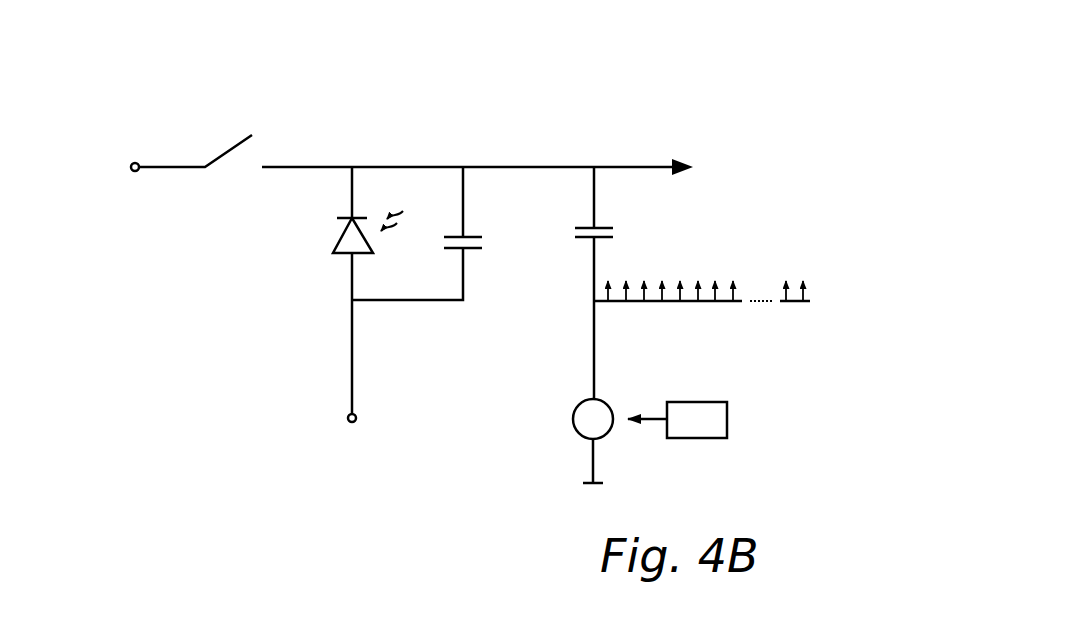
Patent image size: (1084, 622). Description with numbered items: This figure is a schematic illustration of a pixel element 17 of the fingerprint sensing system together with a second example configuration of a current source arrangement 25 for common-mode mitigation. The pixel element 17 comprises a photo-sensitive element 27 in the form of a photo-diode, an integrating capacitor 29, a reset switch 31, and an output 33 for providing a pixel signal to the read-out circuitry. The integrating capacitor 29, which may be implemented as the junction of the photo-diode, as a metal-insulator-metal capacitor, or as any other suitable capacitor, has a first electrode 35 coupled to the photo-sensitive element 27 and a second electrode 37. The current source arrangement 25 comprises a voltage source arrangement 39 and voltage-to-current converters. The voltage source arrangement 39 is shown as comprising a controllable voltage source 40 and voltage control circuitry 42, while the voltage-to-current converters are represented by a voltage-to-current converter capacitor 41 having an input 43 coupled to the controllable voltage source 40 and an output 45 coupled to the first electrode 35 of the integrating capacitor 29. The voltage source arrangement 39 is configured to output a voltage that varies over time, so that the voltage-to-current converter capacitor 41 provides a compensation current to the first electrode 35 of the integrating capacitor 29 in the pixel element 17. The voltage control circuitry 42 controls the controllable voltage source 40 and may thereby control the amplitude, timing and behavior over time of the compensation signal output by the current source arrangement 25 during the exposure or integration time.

The pixel element 17 is at (540, 86).
The reset switch 31 is at (237, 143).
The output 33 is at (648, 167).
The photo-sensitive element 27 is at (338, 232).
The integrating capacitor 29 is at (427, 272).
The first electrode 35 is at (458, 232).
The second electrode 37 is at (463, 250).
The voltage-to-current converter capacitor 41 is at (621, 219).
The output 45 is at (592, 222).
The input 43 is at (592, 242).
The current source arrangement 25 is at (545, 424).
The controllable voltage source 40 is at (608, 403).
The voltage source arrangement 39 is at (563, 447).
The voltage control circuitry 42 is at (727, 422).